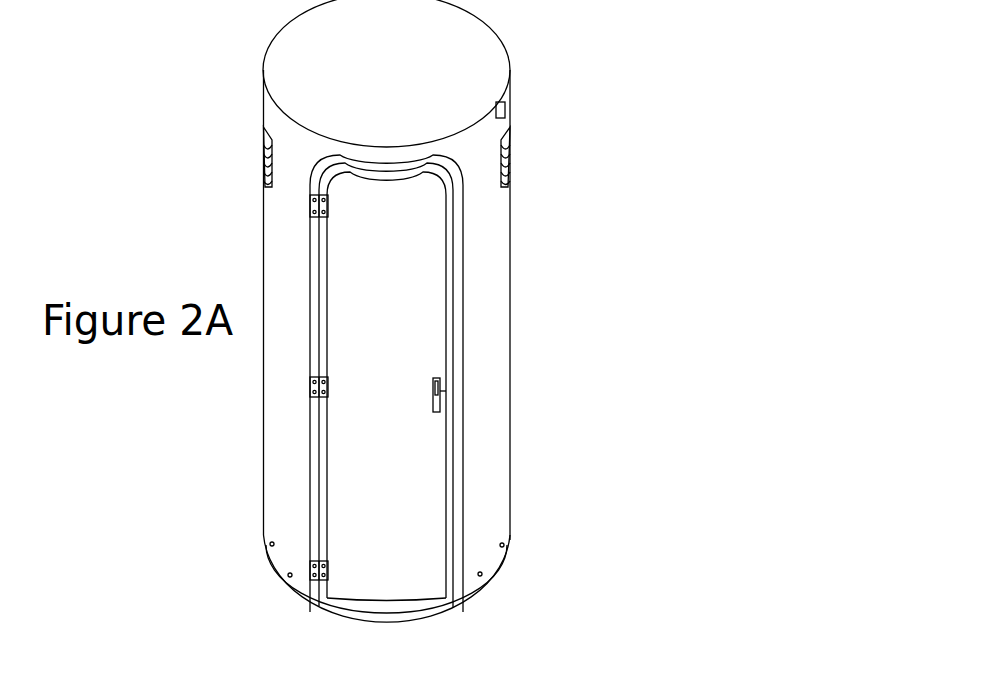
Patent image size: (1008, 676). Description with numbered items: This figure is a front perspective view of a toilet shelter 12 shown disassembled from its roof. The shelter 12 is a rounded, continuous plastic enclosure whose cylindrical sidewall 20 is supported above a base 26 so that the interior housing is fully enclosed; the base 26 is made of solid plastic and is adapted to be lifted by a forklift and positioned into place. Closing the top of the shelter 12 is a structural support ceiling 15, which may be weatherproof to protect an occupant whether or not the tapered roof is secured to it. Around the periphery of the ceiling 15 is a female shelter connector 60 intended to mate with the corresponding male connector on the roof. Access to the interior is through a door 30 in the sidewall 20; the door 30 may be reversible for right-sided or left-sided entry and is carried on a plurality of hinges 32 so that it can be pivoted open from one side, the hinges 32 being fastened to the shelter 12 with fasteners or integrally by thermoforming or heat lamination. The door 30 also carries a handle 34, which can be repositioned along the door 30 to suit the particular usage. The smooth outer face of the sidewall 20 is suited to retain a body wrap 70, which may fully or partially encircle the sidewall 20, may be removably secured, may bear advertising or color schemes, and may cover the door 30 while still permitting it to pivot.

The shelter 12 is at (280, 193).
The structural support ceiling 15 is at (323, 42).
The sidewall 20 is at (478, 345).
The base 26 is at (296, 597).
The door 30 is at (440, 518).
The hinges 32 is at (310, 207).
The handle 34 is at (444, 389).
The female shelter connector 60 is at (508, 103).
The body wrap 70 is at (510, 272).